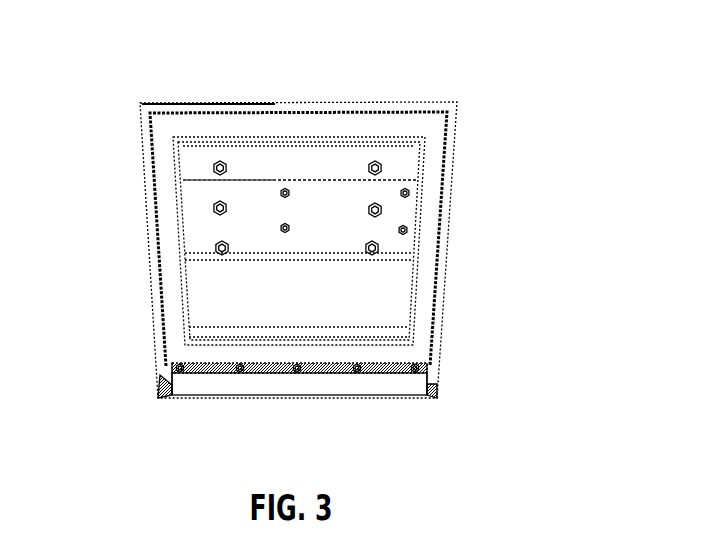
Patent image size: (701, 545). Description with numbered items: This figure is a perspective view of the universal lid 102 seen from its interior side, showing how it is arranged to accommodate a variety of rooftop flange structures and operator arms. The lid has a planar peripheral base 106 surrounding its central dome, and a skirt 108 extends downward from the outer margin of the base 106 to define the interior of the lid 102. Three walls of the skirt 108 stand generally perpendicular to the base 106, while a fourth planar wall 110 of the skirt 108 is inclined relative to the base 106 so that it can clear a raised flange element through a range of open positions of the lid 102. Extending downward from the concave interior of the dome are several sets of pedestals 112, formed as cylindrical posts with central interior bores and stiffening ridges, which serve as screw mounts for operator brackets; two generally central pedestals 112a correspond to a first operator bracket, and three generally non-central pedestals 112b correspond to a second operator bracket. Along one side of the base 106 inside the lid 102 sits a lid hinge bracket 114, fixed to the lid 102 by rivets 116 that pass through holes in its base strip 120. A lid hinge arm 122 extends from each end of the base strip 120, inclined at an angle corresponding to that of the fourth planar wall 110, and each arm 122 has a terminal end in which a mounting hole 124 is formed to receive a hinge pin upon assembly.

The universal lid 102 is at (300, 248).
The planar peripheral base 106 is at (160, 132).
The skirt 108 is at (175, 105).
The fourth planar wall 110 is at (280, 410).
The pedestals 112 is at (311, 221).
The central pedestals 112a is at (291, 193).
The non-central pedestals 112b is at (228, 172).
The lid hinge bracket 114 is at (209, 350).
The rivets 116 is at (297, 373).
The base strip 120 is at (387, 371).
The lid hinge arm 122 is at (170, 373).
The mounting hole 124 is at (156, 384).